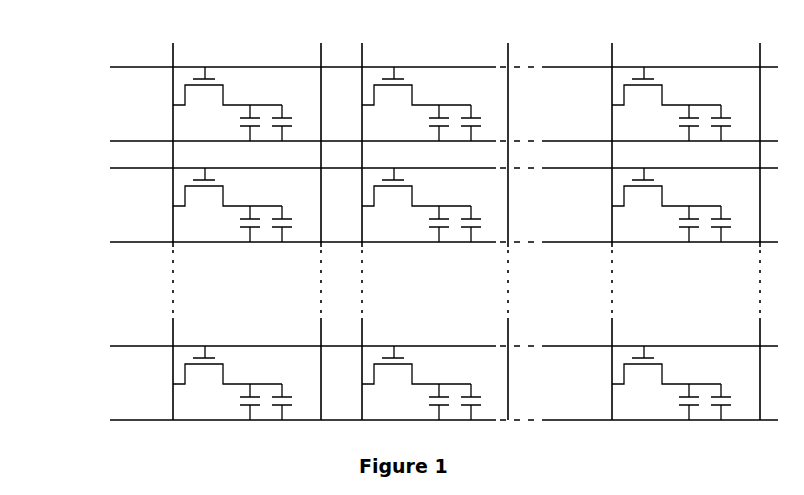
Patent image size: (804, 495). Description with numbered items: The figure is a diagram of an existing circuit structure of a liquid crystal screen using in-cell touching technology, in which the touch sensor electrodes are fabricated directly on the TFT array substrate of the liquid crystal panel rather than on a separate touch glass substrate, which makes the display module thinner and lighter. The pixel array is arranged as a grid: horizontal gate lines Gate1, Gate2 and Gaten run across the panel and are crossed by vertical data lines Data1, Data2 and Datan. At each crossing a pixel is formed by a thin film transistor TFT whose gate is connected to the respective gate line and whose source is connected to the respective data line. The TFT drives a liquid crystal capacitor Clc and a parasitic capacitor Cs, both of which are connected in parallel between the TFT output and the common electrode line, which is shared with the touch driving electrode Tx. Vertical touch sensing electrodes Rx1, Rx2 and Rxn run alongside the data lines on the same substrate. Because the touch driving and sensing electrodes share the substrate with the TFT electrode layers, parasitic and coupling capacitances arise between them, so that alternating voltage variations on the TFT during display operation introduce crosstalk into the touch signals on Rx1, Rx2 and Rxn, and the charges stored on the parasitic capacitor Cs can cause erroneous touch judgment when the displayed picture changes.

The thin film transistor TFT is at (447, 225).
The liquid crystal capacitor Clc is at (456, 262).
The parasitic capacitor Cs is at (511, 262).
The gate line Gate1 is at (420, 67).
The gate line Gate2 is at (420, 168).
The gate line Gaten is at (420, 346).
The data line Data1 is at (173, 221).
The data line Data2 is at (362, 221).
The data line Datan is at (612, 221).
The touch sensing electrode Rx1 is at (320, 221).
The touch sensing electrode Rx2 is at (507, 221).
The touch sensing electrode Rxn is at (759, 221).